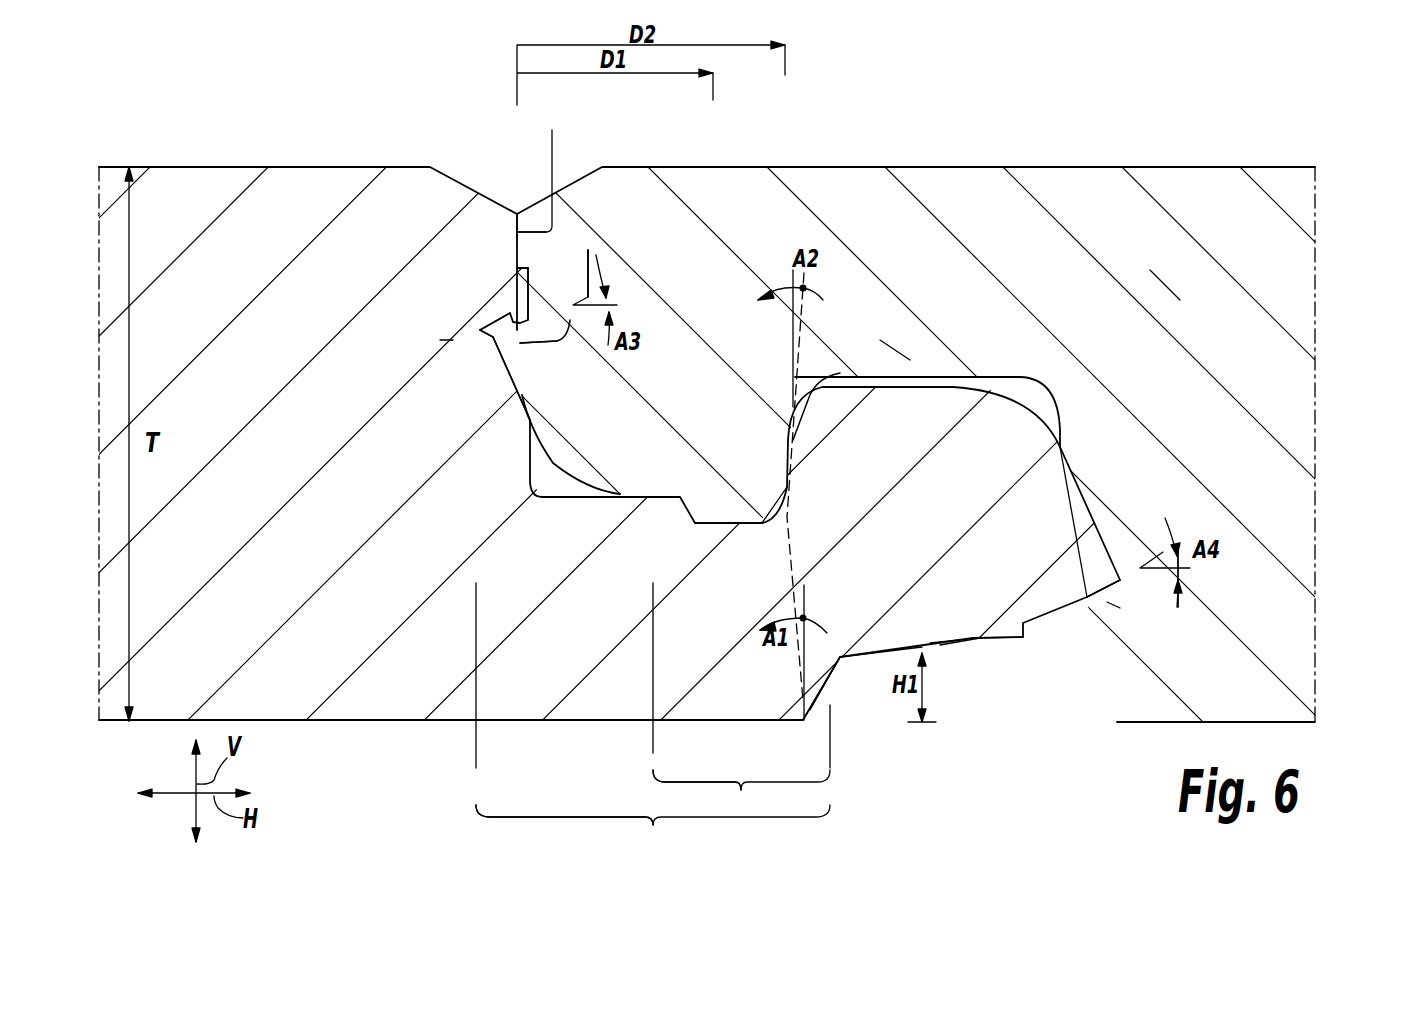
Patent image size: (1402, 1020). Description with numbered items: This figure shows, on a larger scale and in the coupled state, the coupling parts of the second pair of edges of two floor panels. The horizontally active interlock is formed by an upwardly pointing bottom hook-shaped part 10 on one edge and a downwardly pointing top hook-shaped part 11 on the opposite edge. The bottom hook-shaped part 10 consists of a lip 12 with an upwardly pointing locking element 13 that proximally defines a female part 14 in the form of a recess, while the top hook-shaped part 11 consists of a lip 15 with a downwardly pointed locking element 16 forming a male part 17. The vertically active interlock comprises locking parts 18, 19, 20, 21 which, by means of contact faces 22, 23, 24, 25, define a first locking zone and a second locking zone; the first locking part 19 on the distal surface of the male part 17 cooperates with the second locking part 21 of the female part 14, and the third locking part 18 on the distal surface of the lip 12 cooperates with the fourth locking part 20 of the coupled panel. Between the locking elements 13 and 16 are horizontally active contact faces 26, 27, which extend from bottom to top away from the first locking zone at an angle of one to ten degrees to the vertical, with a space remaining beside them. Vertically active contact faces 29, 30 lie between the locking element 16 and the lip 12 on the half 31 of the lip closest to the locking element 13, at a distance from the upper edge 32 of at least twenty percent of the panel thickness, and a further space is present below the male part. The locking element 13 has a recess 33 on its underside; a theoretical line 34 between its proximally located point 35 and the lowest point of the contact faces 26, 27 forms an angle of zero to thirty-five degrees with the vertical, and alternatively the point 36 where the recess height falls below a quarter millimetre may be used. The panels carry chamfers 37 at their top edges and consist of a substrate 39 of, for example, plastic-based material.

The bottom hook-shaped part 10 is at (586, 702).
The top hook-shaped part 11 is at (826, 188).
The lip 12 is at (700, 580).
The upwardly pointing locking element 13 is at (947, 660).
The female part 14 is at (571, 828).
The lip 15 is at (895, 345).
The downwardly pointing locking element 16 is at (589, 255).
The male part 17 is at (512, 421).
The third locking part 18 is at (988, 648).
The first locking part 19 is at (568, 318).
The fourth locking part 20 is at (1090, 632).
The second locking part 21 is at (497, 313).
The contact face 22 is at (1073, 600).
The contact face 23 is at (513, 320).
The contact face 24 is at (1127, 552).
The contact face 25 is at (483, 332).
The contact face 26 is at (827, 377).
The contact face 27 is at (783, 487).
The contact face 29 is at (750, 523).
The contact face 30 is at (727, 523).
The half of the lip 31 is at (709, 792).
The upper edge 32 is at (517, 213).
The recess 33 is at (963, 672).
The theoretical line 34 is at (790, 533).
The proximally located point 35 is at (803, 720).
The point 36 is at (825, 685).
The chamfer 37 is at (515, 265).
The substrate 39 is at (1163, 277).